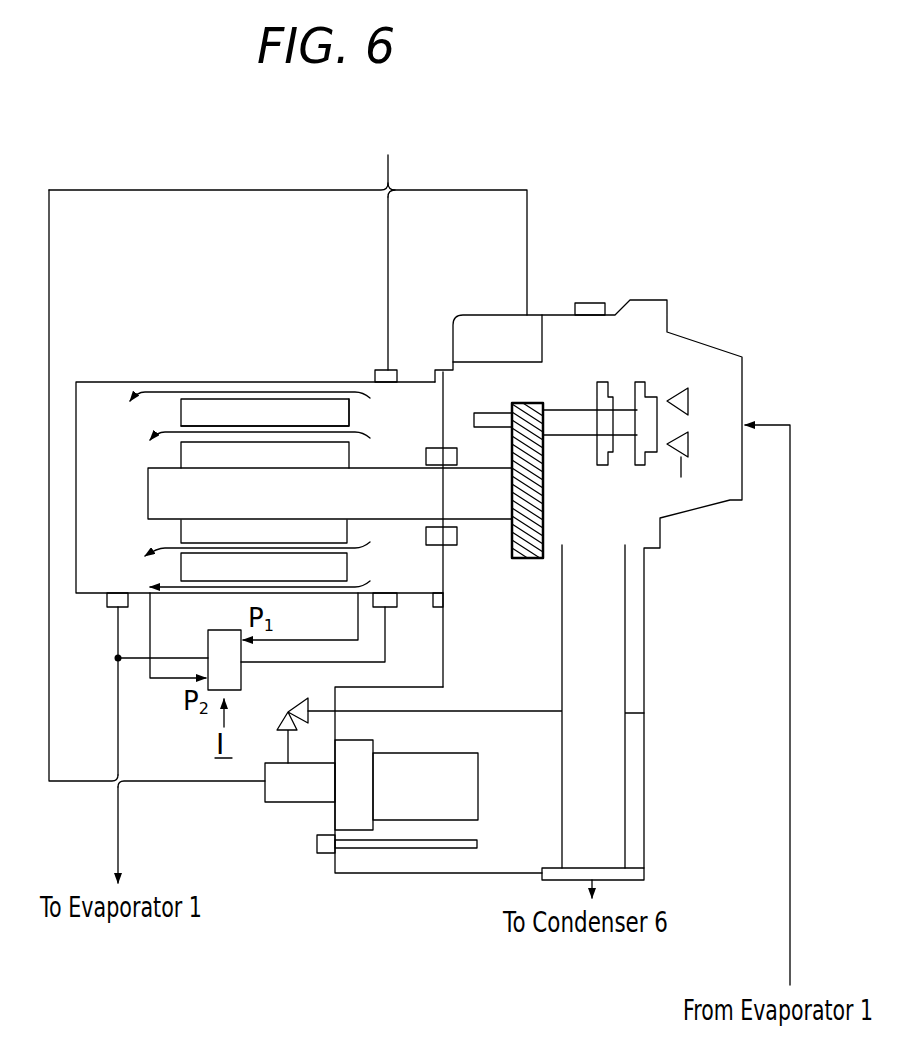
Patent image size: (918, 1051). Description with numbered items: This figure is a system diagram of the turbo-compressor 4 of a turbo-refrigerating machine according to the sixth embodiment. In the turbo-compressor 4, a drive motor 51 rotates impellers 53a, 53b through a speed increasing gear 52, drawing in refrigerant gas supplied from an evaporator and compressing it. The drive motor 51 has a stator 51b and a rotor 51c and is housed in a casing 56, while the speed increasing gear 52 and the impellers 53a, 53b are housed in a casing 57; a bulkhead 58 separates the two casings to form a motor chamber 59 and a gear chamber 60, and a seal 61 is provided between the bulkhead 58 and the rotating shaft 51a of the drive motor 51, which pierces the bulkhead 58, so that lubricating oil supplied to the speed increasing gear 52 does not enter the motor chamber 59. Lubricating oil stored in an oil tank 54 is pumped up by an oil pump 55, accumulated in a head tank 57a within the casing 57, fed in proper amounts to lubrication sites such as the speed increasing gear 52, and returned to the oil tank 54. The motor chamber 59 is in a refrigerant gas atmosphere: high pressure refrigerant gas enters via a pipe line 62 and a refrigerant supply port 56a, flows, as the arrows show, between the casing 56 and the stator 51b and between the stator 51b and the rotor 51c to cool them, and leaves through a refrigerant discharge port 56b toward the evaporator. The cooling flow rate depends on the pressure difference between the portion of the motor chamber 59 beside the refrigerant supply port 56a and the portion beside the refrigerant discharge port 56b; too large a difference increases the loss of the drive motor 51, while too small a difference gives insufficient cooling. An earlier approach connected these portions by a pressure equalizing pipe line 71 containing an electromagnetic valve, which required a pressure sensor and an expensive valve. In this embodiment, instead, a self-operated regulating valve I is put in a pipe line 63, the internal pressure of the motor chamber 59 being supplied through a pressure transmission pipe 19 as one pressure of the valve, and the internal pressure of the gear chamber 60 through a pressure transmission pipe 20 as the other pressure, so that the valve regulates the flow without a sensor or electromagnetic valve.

The turbo-compressor 4 is at (620, 498).
The pressure transmission pipe 19 is at (310, 640).
The pressure transmission pipe 20 is at (168, 682).
The drive motor 51 is at (211, 353).
The rotating shaft 51a is at (152, 493).
The stator 51b is at (181, 410).
The rotor 51c is at (181, 532).
The speed increasing gear 52 is at (543, 482).
The impeller 53a is at (649, 400).
The impeller 53b is at (609, 393).
The oil tank 54 is at (640, 751).
The oil pump 55 is at (462, 766).
The casing 56 is at (131, 380).
The refrigerant supply port 56a is at (398, 330).
The refrigerant discharge port 56b is at (108, 607).
The casing 57 is at (745, 384).
The head tank 57a is at (527, 312).
The bulkhead 58 is at (446, 403).
The motor chamber 59 is at (387, 413).
The gear chamber 60 is at (505, 646).
The seal 61 is at (452, 542).
The pipe line 62 is at (390, 250).
The pipe line 63 is at (130, 836).
The pressure equalizing pipe line 71 is at (292, 662).